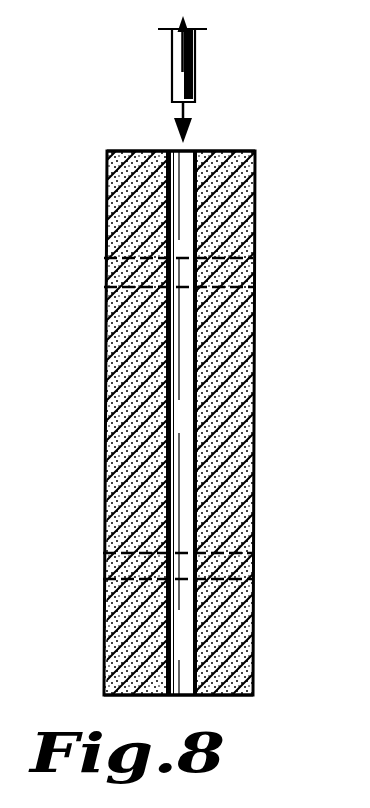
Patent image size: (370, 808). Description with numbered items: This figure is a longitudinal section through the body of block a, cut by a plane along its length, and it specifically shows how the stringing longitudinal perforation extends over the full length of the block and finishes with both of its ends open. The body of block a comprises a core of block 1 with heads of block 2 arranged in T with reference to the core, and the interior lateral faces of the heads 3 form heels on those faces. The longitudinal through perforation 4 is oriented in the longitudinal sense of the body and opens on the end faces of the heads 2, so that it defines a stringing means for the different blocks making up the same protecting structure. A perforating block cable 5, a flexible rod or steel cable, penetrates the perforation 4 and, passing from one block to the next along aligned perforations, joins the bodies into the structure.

The core of block 1 is at (125, 419).
The heads of block 2 is at (109, 193).
The interior lateral faces of the heads 3 is at (110, 305).
The longitudinal through perforation 4 is at (163, 662).
The perforating block cable 5 is at (193, 77).
The body of block a is at (90, 263).